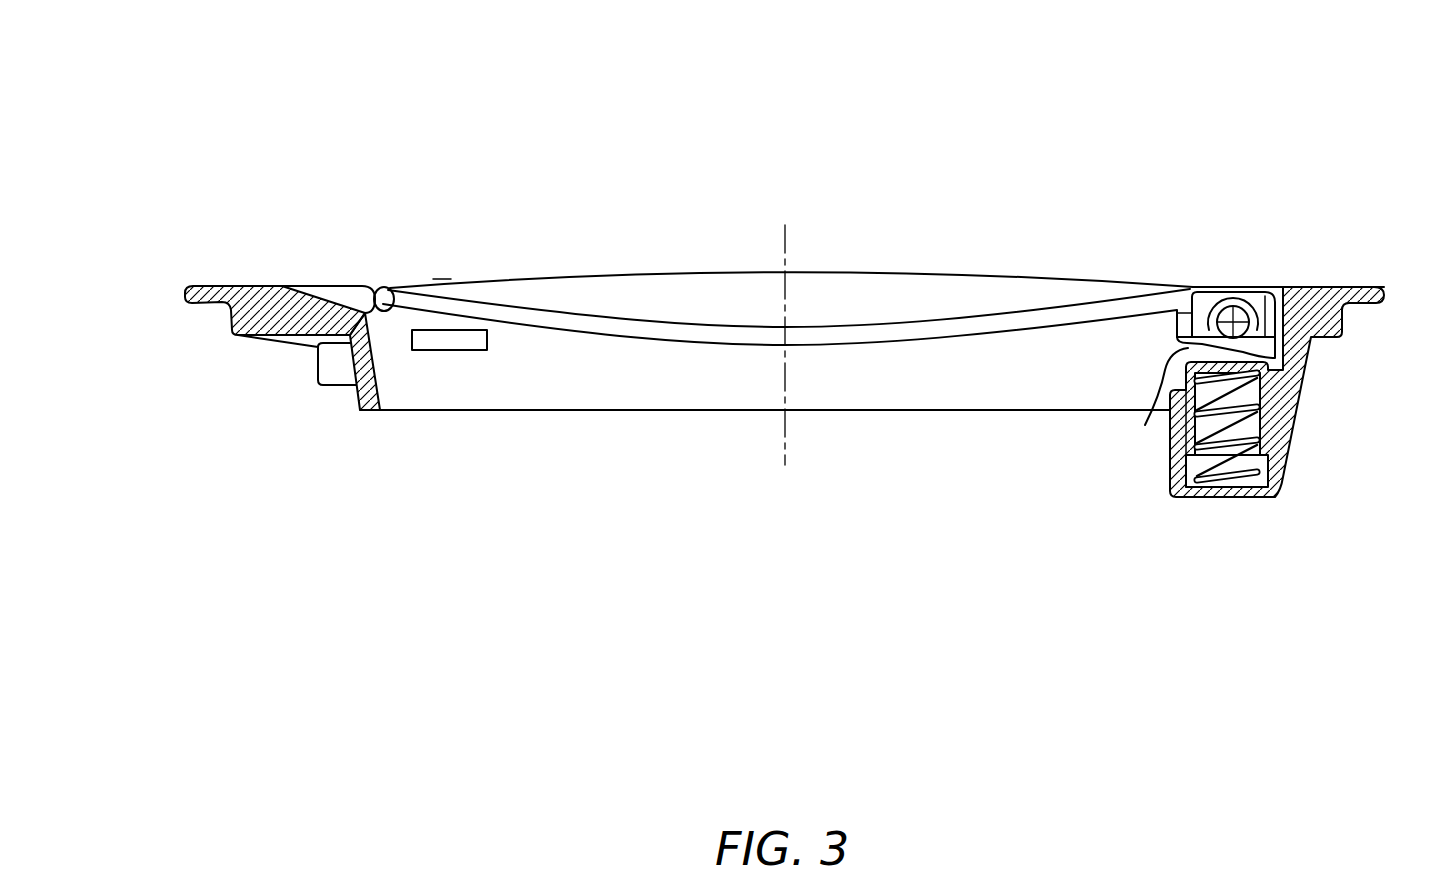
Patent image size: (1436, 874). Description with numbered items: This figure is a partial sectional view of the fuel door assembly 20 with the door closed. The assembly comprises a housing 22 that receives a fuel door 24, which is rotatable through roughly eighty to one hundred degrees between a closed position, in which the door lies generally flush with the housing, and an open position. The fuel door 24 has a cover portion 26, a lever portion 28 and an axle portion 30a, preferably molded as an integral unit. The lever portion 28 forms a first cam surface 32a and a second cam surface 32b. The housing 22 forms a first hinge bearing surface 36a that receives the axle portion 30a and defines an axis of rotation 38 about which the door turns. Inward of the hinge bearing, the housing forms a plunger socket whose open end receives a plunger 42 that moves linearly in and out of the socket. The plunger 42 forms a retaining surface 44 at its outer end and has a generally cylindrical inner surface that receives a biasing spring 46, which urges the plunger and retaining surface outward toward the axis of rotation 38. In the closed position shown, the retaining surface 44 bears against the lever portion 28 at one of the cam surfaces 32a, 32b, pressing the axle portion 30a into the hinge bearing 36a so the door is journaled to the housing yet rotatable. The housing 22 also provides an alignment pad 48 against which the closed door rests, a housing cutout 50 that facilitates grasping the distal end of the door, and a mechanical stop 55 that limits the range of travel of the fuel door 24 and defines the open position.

The fuel door assembly 20 is at (395, 122).
The housing 22 is at (212, 329).
The fuel door 24 is at (388, 283).
The cover portion 26 is at (863, 293).
The lever portion 28 is at (1222, 287).
The axle portion 30a is at (1208, 287).
The first cam surface 32a is at (1145, 425).
The second cam surface 32b is at (1283, 287).
The first hinge bearing surface 36a is at (1230, 287).
The axis of rotation 38 is at (1243, 287).
The plunger 42 is at (1275, 390).
The retaining surface 44 is at (1182, 372).
The biasing spring 46 is at (1257, 477).
The alignment pad 48 is at (417, 323).
The housing cutout 50 is at (347, 290).
The mechanical stop 55 is at (1307, 287).